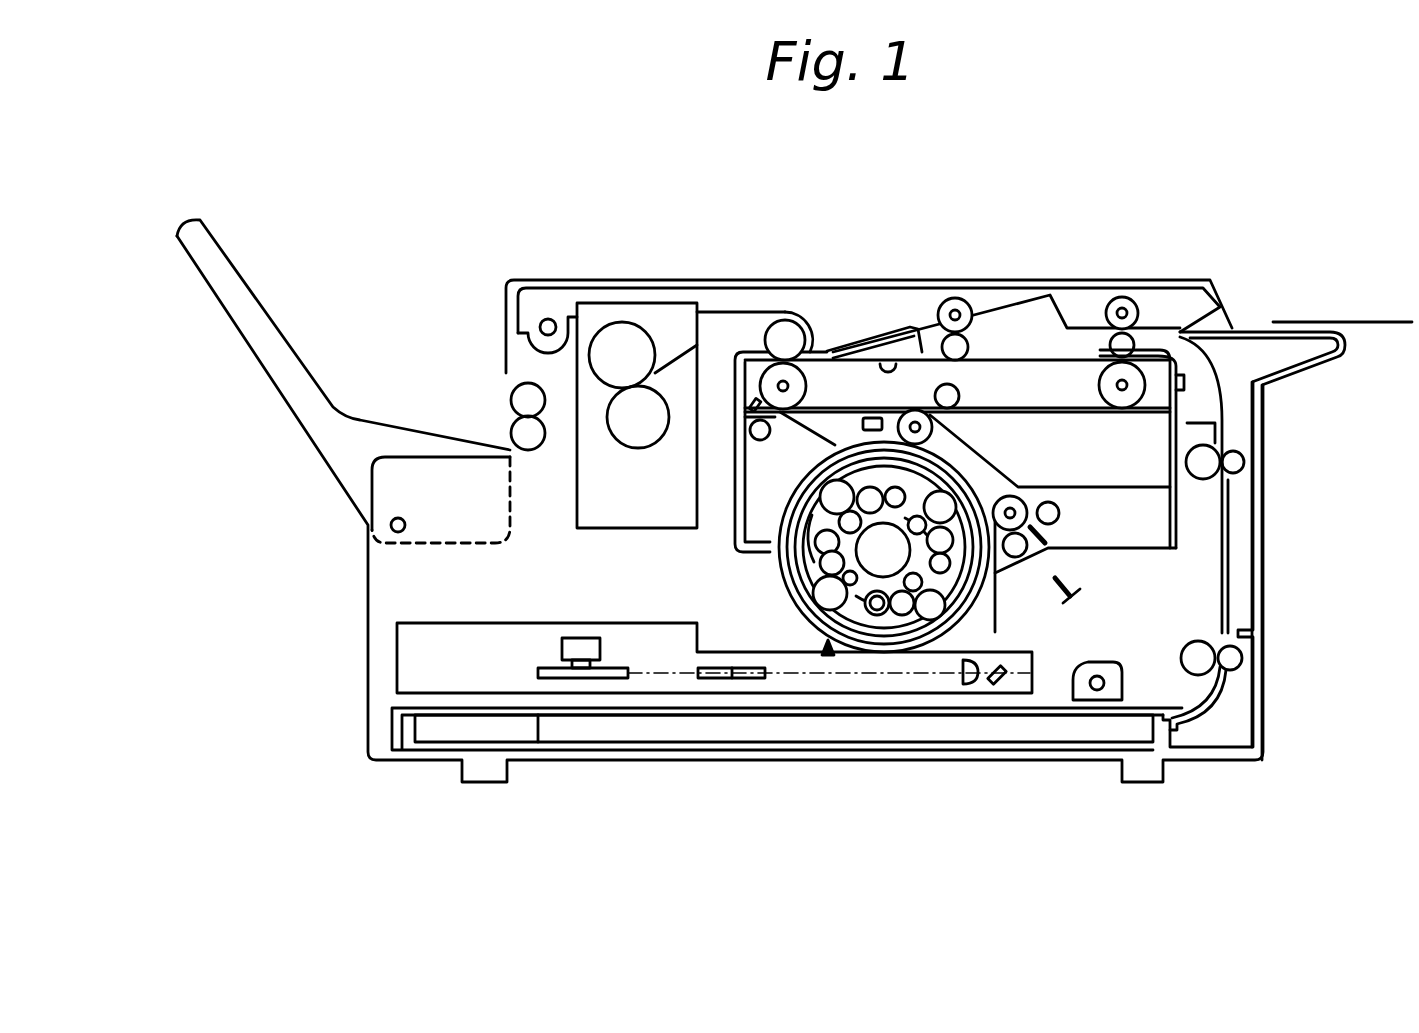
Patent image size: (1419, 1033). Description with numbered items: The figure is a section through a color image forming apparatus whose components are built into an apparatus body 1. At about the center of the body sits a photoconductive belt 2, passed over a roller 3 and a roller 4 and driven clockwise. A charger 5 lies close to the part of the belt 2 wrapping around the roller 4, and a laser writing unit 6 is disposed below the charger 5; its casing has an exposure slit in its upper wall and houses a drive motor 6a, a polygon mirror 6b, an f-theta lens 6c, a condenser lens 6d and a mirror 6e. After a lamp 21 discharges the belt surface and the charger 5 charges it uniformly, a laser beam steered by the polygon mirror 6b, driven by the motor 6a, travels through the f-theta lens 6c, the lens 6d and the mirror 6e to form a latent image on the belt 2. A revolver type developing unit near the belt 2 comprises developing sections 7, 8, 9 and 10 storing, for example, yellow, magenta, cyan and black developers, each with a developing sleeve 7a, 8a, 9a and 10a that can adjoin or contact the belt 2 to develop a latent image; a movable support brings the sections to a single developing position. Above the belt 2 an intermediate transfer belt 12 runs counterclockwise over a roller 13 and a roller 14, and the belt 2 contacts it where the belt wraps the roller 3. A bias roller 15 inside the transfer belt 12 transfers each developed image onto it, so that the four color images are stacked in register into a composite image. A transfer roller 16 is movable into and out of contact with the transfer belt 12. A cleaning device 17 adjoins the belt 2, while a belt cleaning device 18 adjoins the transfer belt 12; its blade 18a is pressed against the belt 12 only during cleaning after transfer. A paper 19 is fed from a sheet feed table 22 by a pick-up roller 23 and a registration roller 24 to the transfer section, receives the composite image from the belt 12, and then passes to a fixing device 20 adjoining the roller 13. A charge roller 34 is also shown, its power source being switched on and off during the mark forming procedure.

The apparatus body 1 is at (507, 282).
The photoconductive belt 2 is at (977, 460).
The roller 3 is at (920, 360).
The roller 4 is at (1040, 560).
The charger 5 is at (1023, 570).
The laser writing unit 6 is at (688, 733).
The drive motor 6a is at (562, 648).
The polygon mirror 6b is at (590, 680).
The f-theta lens 6c is at (712, 680).
The condenser lens 6d is at (967, 684).
The mirror 6e is at (997, 620).
The developing section 7 is at (1015, 557).
The developing sleeve 7a is at (1017, 585).
The developing section 8 is at (888, 630).
The developing sleeve 8a is at (930, 608).
The developing section 9 is at (874, 536).
The developing sleeve 9a is at (788, 605).
The developing section 10 is at (837, 485).
The developing sleeve 10a is at (860, 443).
The intermediate transfer belt 12 is at (913, 415).
The roller 13 is at (765, 380).
The roller 14 is at (1113, 365).
The bias roller 15 is at (950, 395).
The transfer roller 16 is at (785, 333).
The cleaning device 17 is at (1162, 532).
The belt cleaning device 18 is at (733, 500).
The blade 18a is at (718, 445).
The paper 19 is at (1353, 322).
The fixing device 20 is at (587, 317).
The lamp 21 is at (1257, 634).
The sheet feed table 22 is at (1250, 333).
The pick-up roller 23 is at (1122, 297).
The registration roller 24 is at (968, 300).
The charge roller 34 is at (1060, 513).